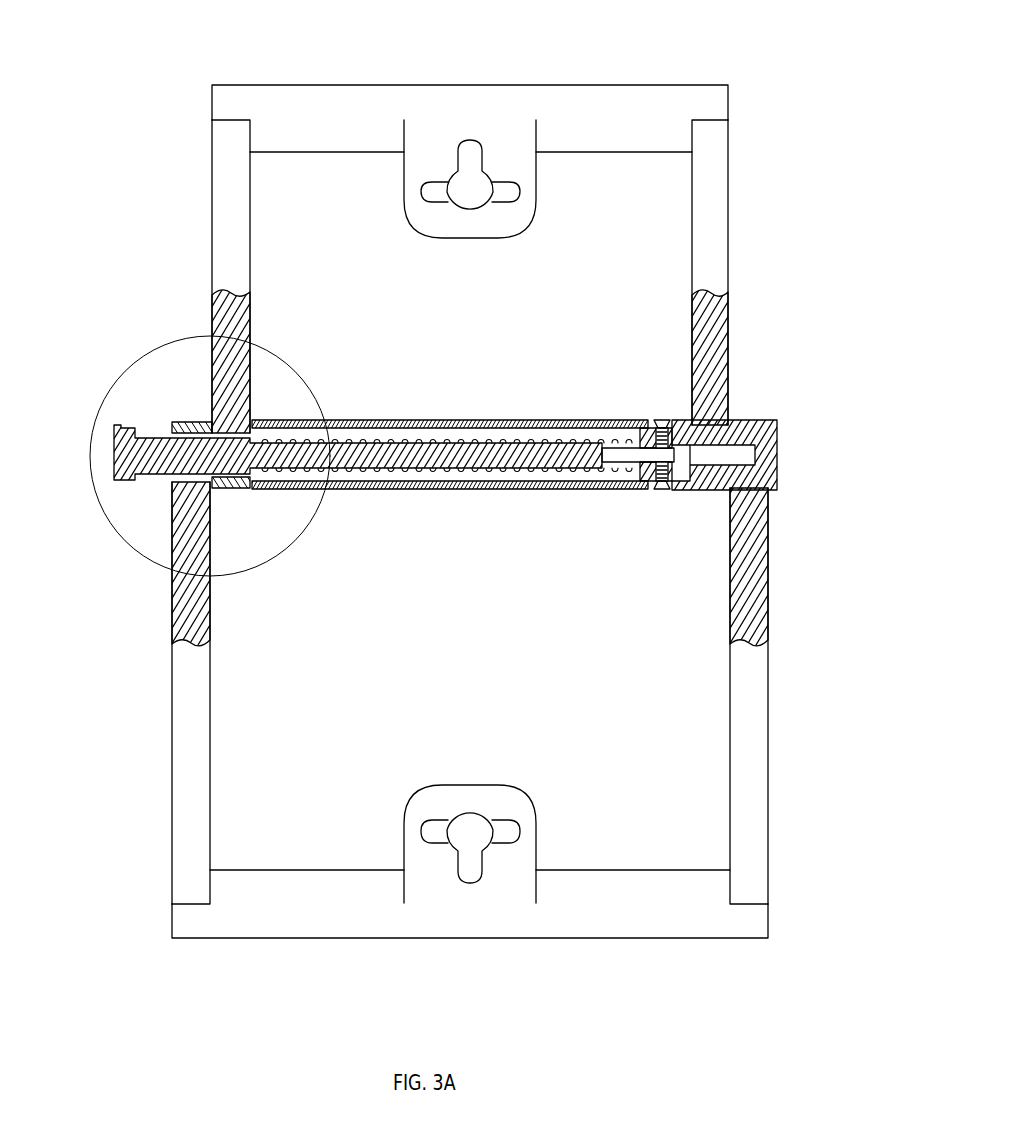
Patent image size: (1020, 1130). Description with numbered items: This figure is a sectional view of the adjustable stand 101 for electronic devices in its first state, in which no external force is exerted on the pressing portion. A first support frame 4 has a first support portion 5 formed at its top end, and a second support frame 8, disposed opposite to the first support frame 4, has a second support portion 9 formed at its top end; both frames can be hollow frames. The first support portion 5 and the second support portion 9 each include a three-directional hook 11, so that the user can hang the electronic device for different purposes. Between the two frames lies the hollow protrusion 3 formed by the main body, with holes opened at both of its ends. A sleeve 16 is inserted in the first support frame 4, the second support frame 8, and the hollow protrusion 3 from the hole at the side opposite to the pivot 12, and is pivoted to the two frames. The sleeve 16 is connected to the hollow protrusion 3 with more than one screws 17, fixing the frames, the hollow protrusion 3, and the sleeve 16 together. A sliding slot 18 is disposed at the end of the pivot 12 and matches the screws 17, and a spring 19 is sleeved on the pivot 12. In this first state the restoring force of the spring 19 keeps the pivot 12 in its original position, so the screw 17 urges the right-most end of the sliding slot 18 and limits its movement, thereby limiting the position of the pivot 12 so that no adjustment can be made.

The second support portion 9 is at (643, 110).
The second support frame 8 is at (728, 224).
The first support frame 4 is at (768, 757).
The first support portion 5 is at (655, 912).
The three-directional hook 11 is at (436, 222).
The hollow protrusion 3 is at (518, 420).
The spring 19 is at (462, 432).
The pivot 12 is at (478, 470).
The sliding slot 18 is at (614, 466).
The screw 17 is at (662, 424).
The sleeve 16 is at (766, 450).
The adjustable stand 101 is at (238, 968).